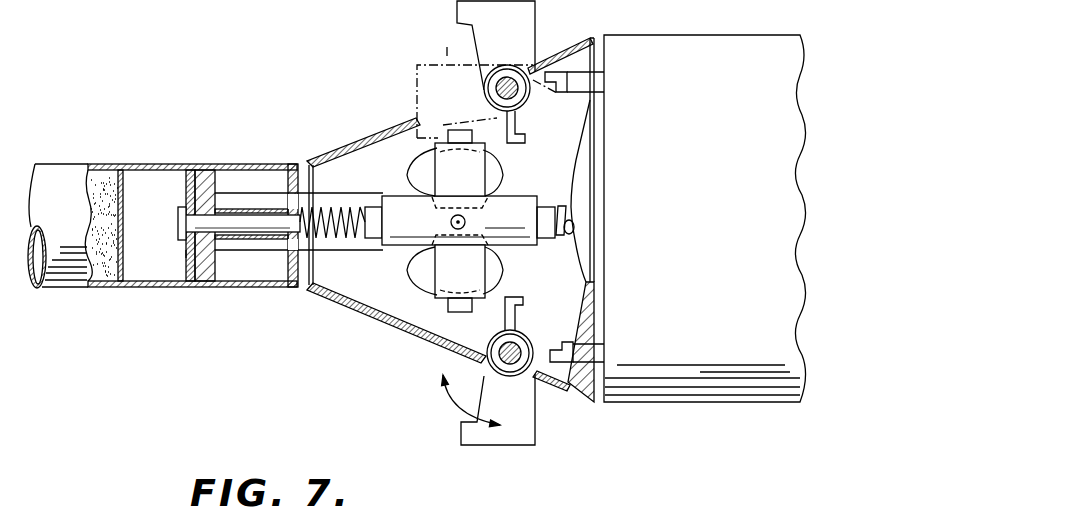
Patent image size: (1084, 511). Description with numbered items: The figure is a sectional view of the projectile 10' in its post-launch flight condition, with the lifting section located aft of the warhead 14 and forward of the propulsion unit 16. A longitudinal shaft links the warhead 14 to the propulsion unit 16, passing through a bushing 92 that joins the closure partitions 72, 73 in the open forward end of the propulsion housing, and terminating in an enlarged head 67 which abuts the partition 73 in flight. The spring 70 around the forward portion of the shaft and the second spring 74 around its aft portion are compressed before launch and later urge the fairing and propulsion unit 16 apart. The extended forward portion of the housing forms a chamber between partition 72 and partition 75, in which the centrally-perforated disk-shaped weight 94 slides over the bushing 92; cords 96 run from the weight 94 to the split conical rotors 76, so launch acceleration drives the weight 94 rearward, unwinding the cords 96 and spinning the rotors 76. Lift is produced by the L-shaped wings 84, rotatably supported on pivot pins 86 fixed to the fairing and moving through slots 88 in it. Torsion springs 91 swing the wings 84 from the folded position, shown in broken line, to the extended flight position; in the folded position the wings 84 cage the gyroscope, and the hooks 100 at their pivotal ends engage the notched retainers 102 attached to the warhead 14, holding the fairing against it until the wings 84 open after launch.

The projectile 10' is at (145, 33).
The warhead 14 is at (713, 190).
The propulsion unit 16 is at (68, 176).
The enlarged head 67 is at (178, 226).
The spring 70 is at (574, 227).
The closure partition 72 is at (289, 178).
The closure partition 73 is at (186, 254).
The second spring 74 is at (357, 238).
The partition 75 is at (130, 189).
The split conical rotors 76 is at (503, 172).
The L-shaped wings 84 is at (456, 26).
The pivot pins 86 is at (517, 77).
The slots 88 is at (414, 118).
The torsion springs 91 is at (512, 70).
The bushing 92 is at (284, 251).
The disk-shaped weight 94 is at (204, 164).
The cords 96 is at (250, 200).
The hook 100 is at (527, 126).
The notched retainer 102 is at (604, 82).